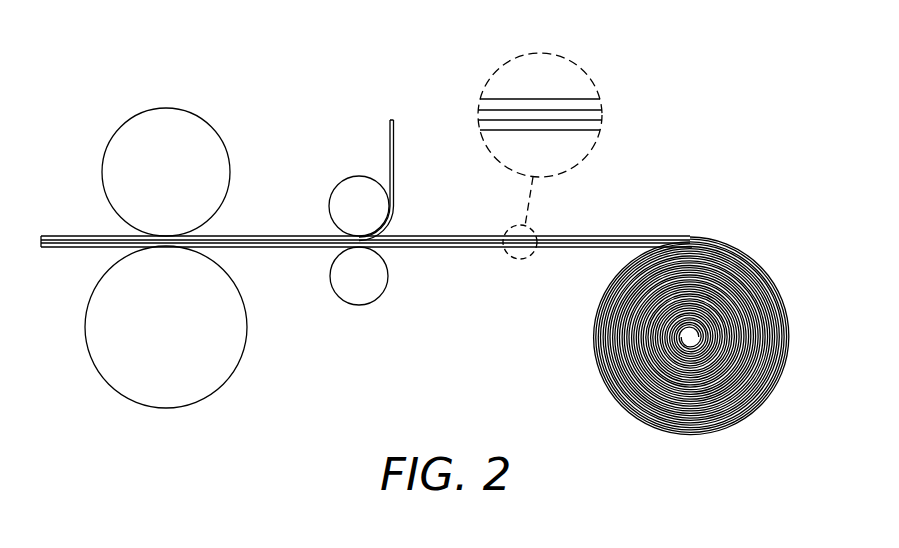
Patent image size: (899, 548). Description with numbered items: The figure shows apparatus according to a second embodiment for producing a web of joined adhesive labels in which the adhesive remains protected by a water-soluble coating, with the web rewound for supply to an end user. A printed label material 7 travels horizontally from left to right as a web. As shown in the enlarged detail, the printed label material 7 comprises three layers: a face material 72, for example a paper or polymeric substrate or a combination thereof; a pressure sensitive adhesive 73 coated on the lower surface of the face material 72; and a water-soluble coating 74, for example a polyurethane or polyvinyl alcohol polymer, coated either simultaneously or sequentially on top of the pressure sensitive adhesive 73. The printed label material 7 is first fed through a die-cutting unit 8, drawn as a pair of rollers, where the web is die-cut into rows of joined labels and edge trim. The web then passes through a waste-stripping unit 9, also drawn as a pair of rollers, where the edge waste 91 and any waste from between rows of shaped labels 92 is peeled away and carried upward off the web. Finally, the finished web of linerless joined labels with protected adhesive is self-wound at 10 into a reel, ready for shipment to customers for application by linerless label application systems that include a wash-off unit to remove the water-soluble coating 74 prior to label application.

The printed label material 7 is at (66, 227).
The die-cutting unit 8 is at (168, 408).
The waste-stripping unit 9 is at (359, 305).
The self-wound reel 10 is at (789, 337).
The face material 72 is at (500, 103).
The pressure sensitive adhesive 73 is at (597, 115).
The water-soluble coating 74 is at (585, 128).
The edge waste 91 is at (390, 133).
The waste from between rows of shaped labels 92 is at (338, 180).